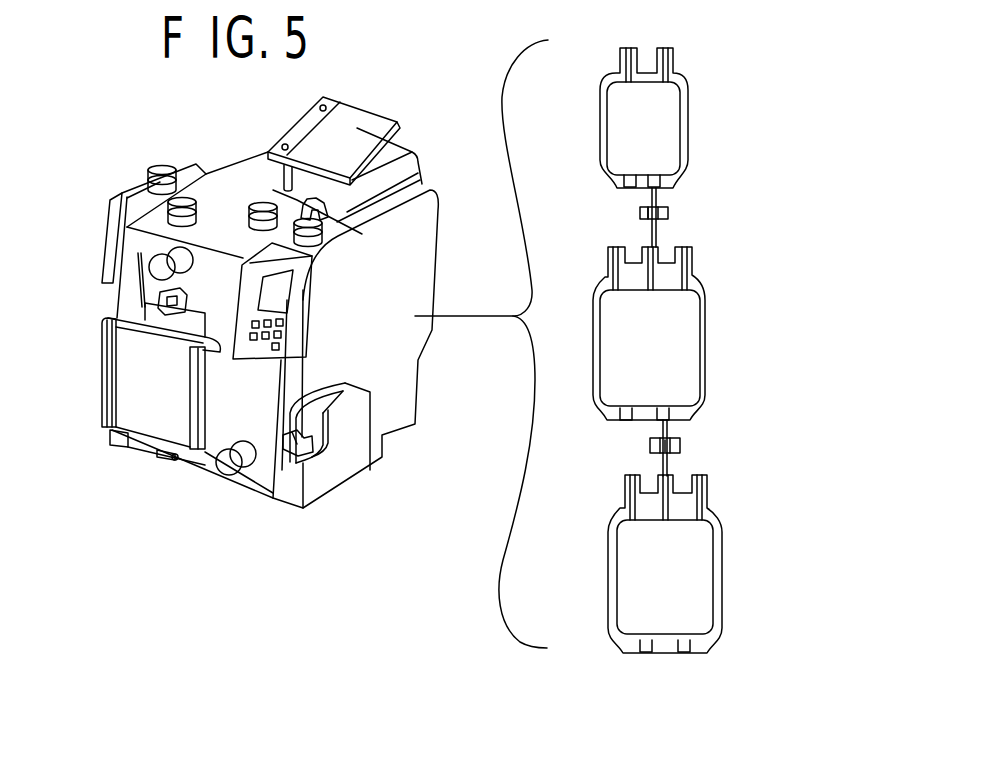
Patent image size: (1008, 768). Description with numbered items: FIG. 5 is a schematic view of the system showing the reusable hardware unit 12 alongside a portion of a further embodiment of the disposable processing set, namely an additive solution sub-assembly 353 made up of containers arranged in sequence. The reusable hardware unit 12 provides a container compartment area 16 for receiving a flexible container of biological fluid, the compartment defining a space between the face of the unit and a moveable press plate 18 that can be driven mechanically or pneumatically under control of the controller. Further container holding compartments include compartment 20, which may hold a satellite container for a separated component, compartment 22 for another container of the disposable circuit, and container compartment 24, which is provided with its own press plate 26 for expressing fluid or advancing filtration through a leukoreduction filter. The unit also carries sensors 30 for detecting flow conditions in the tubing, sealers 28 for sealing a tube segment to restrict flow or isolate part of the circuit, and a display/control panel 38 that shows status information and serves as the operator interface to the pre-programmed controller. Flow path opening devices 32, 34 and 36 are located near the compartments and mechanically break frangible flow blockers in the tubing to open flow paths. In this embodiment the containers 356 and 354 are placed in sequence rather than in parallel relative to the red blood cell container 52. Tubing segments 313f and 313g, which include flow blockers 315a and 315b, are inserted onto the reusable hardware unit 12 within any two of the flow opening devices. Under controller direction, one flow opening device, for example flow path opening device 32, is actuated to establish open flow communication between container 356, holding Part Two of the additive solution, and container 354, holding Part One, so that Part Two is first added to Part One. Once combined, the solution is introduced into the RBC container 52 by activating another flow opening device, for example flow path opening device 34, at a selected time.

The reusable hardware unit 12 is at (90, 194).
The container compartment area 16 is at (103, 412).
The press plate 18 is at (147, 420).
The compartment 20 is at (122, 198).
The compartment 22 is at (345, 443).
The container compartment 24 is at (378, 170).
The press plate 26 is at (360, 118).
The sealers 28 is at (158, 268).
The sensors 30 is at (195, 206).
The flow path opening device 32 is at (165, 300).
The flow path opening device 34 is at (325, 208).
The flow path opening device 36 is at (293, 449).
The display/control panel 38 is at (273, 324).
The RBC container 52 is at (690, 560).
The container set 353 is at (797, 348).
The container 354 is at (678, 310).
The container 356 is at (665, 103).
The tubing segment 313f is at (657, 228).
The tubing segment 313g is at (668, 463).
The flow blocker 315a is at (641, 214).
The flow blocker 315b is at (650, 452).